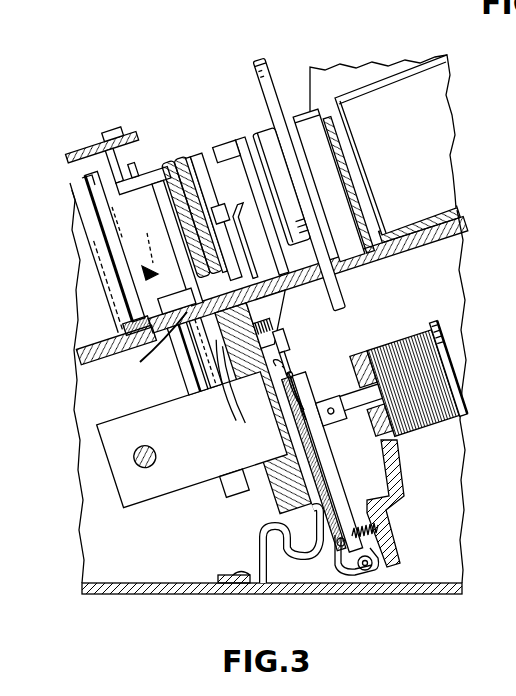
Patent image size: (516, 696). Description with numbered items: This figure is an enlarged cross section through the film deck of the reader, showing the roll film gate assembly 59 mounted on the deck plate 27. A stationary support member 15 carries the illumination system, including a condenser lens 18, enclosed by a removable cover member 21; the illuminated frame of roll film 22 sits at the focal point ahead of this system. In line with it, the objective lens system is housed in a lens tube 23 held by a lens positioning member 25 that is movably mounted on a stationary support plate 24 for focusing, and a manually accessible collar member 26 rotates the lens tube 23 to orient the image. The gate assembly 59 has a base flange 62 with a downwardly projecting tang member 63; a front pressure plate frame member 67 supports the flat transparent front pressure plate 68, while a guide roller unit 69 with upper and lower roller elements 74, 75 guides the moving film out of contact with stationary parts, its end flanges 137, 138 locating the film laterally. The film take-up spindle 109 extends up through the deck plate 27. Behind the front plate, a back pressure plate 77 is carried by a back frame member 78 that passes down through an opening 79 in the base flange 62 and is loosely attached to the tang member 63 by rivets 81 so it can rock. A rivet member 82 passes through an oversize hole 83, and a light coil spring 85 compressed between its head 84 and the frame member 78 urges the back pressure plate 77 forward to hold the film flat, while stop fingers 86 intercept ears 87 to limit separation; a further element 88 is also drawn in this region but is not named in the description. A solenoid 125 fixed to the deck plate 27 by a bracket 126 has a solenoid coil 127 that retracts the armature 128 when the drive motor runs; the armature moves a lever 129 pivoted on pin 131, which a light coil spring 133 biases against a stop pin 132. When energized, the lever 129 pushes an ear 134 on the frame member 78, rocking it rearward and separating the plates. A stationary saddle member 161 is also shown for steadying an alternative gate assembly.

The stationary support member 15 is at (75, 383).
The condenser lens 18 is at (100, 308).
The removable cover member 21 is at (88, 152).
The roll film 22 is at (183, 205).
The lens tube 23 is at (425, 116).
The stationary support plate 24 is at (396, 260).
The lens positioning member 25 is at (440, 213).
The collar member 26 is at (262, 62).
The deck plate 27 is at (145, 360).
The roll film gate assembly 59 is at (150, 370).
The base flange 62 is at (310, 243).
The tang member 63 is at (285, 500).
The front pressure plate frame member 67 is at (166, 152).
The front pressure plate 68 is at (180, 152).
The film guide roller unit 69 is at (148, 272).
The upper roller element 74 is at (158, 235).
The lower roller element 75 is at (110, 312).
The back pressure plate 77 is at (192, 155).
The back frame member 78 is at (187, 155).
The opening 79 is at (248, 298).
The rivet 81 is at (325, 480).
The rivet member 82 is at (240, 405).
The oversize hole 83 is at (225, 395).
The head 84 is at (275, 335).
The light coil spring 85 is at (282, 350).
The stop finger 86 is at (252, 207).
The ear 87 is at (270, 178).
The rod 88 is at (210, 183).
The film take-up spindle 109 is at (118, 131).
The solenoid 125 is at (435, 330).
The solenoid bracket 126 is at (348, 312).
The solenoid coil 127 is at (410, 435).
The armature 128 is at (353, 413).
The lever 129 is at (335, 497).
The pin 131 is at (380, 565).
The stop pin 132 is at (355, 548).
The light coil spring 133 is at (386, 525).
The ear 134 is at (292, 372).
The end flange 137 is at (88, 181).
The end flange 138 is at (95, 338).
The stationary saddle member 161 is at (262, 548).